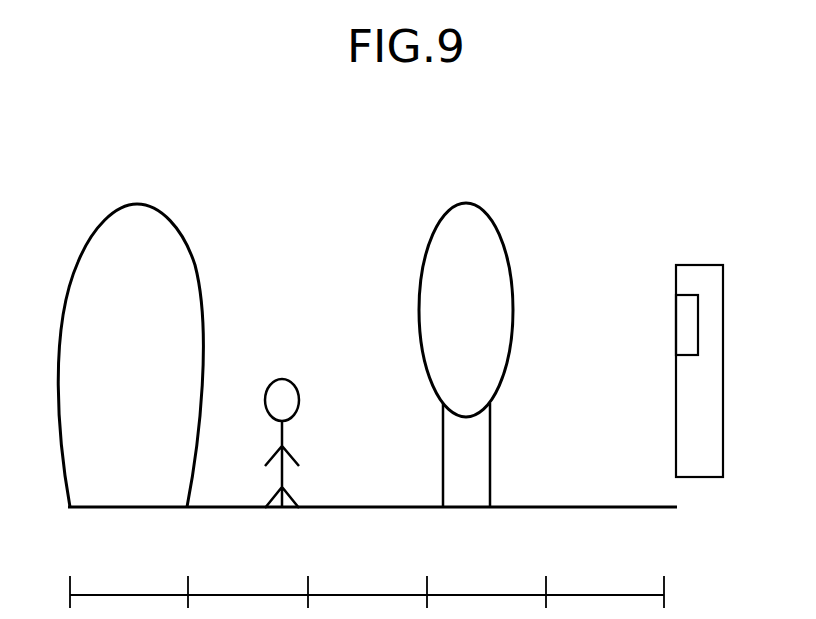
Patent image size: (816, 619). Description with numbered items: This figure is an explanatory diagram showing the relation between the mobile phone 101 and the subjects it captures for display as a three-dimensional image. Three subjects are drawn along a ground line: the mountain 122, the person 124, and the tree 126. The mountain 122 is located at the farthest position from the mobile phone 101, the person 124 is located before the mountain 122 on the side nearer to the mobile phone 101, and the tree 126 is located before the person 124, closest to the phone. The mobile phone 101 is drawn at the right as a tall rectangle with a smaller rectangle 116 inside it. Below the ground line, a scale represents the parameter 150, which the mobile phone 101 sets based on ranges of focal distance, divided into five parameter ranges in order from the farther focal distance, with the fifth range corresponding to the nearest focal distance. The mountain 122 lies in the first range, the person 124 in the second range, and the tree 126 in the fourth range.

The mountain 122 is at (137, 227).
The person 124 is at (283, 388).
The tree 126 is at (468, 218).
The mobile phone 101 is at (702, 262).
The display unit 116 is at (685, 318).
The parameter 150 is at (674, 558).